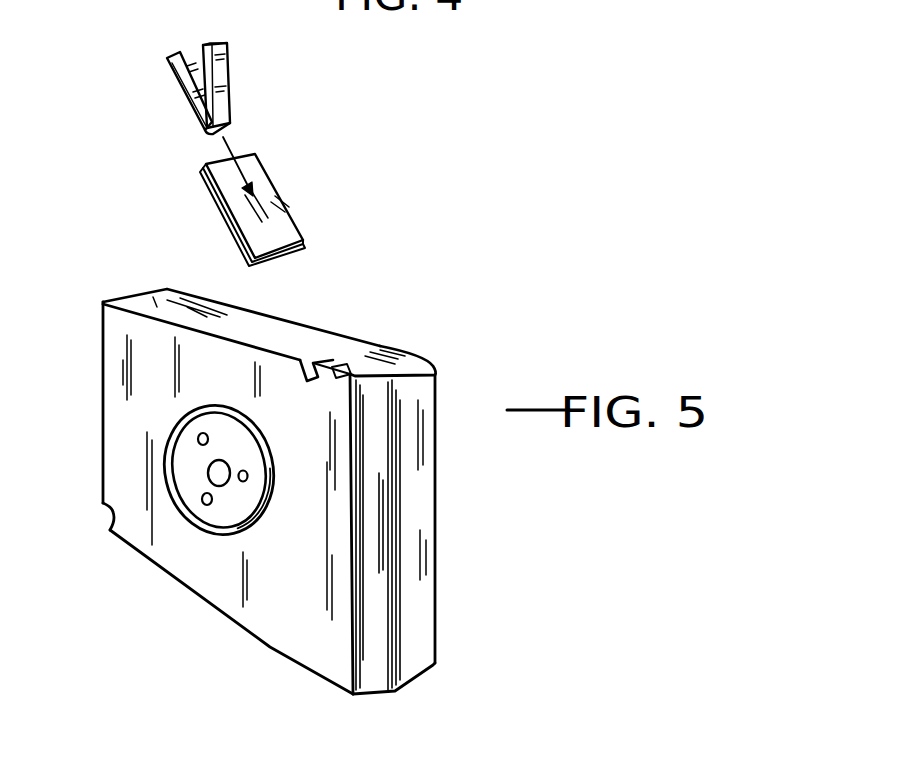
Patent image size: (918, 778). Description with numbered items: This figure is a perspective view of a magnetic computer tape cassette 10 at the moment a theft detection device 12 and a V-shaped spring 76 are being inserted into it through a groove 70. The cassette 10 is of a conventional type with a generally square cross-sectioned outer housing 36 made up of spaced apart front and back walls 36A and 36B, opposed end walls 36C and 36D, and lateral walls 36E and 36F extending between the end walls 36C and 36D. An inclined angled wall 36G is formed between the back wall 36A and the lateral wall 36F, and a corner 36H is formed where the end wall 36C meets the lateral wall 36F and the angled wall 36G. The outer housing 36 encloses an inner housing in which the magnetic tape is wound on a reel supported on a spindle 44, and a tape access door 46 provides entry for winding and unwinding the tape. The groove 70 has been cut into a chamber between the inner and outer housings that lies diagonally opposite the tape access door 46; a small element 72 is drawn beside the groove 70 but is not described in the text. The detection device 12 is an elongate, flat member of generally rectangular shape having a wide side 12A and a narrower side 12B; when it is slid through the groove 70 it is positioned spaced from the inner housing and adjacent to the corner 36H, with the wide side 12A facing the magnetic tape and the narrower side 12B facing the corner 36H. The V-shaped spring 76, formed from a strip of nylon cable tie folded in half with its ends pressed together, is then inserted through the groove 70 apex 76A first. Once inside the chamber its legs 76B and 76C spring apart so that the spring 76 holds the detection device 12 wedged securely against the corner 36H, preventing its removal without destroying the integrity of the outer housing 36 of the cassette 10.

The magnetic computer tape cassette 10 is at (458, 378).
The detection device 12 is at (310, 216).
The wide side 12A is at (207, 181).
The narrower side 12B is at (263, 190).
The outer housing 36 is at (470, 577).
The front wall 36A is at (277, 610).
The back wall 36B is at (217, 297).
The end wall 36C is at (150, 293).
The end wall 36D is at (173, 593).
The lateral wall 36E is at (100, 402).
The lateral wall 36F is at (413, 538).
The angled wall 36G is at (377, 437).
The corner 36H is at (410, 363).
The spindle 44 is at (225, 513).
The access door 46 is at (110, 542).
The groove 70 is at (367, 343).
The tab 72 is at (337, 377).
The V-shaped spring 76 is at (189, 43).
The apex 76A is at (233, 133).
The leg 76B is at (227, 73).
The leg 76C is at (173, 62).